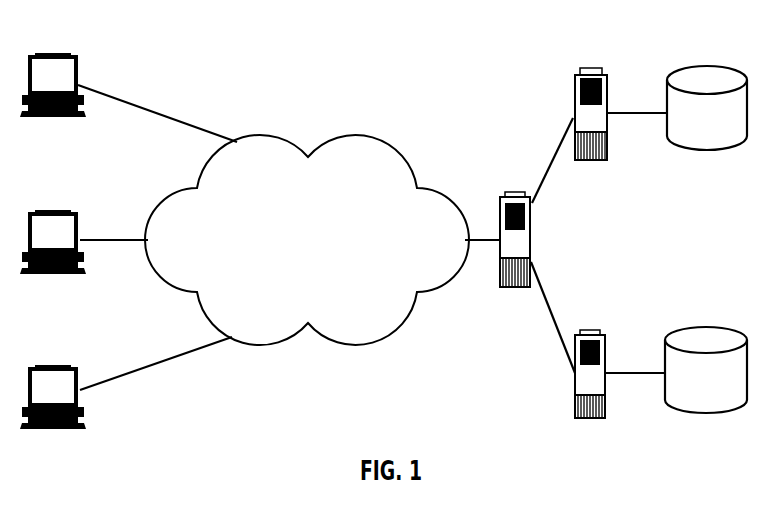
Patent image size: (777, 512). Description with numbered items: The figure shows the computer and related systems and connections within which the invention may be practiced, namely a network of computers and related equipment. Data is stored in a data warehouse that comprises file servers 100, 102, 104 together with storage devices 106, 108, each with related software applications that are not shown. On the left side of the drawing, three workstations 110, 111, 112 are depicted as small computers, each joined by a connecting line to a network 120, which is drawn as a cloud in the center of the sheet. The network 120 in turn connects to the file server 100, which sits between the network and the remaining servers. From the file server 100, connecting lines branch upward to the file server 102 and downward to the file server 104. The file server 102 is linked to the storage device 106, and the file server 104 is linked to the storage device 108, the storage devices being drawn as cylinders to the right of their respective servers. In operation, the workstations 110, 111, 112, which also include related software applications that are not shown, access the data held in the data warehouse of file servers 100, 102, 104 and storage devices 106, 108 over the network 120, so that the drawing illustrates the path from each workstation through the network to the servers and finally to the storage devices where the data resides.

The file server 100 is at (538, 239).
The file server 102 is at (589, 100).
The file server 104 is at (590, 391).
The storage device 106 is at (707, 124).
The storage device 108 is at (706, 385).
The workstation 110 is at (61, 74).
The workstation 111 is at (60, 230).
The workstation 112 is at (61, 385).
The network 120 is at (307, 224).